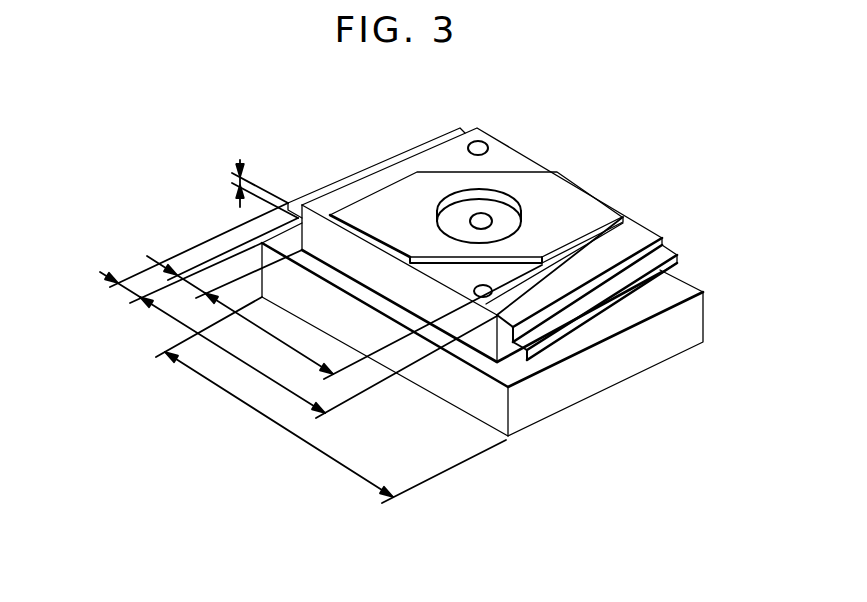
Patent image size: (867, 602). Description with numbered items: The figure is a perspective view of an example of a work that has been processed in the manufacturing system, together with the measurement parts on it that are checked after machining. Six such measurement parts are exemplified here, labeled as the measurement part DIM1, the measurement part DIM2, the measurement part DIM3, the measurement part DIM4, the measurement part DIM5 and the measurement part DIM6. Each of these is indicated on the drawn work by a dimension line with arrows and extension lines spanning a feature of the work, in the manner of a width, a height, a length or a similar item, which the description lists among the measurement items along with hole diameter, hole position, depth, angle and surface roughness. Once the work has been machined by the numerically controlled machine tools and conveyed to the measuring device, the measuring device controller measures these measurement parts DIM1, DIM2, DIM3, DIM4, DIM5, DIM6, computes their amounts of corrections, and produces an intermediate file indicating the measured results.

The measurement part DIM1 is at (331, 400).
The measurement part DIM2 is at (214, 252).
The measurement part DIM3 is at (373, 322).
The measurement part DIM4 is at (254, 175).
The measurement part DIM5 is at (185, 255).
The measurement part DIM6 is at (318, 357).